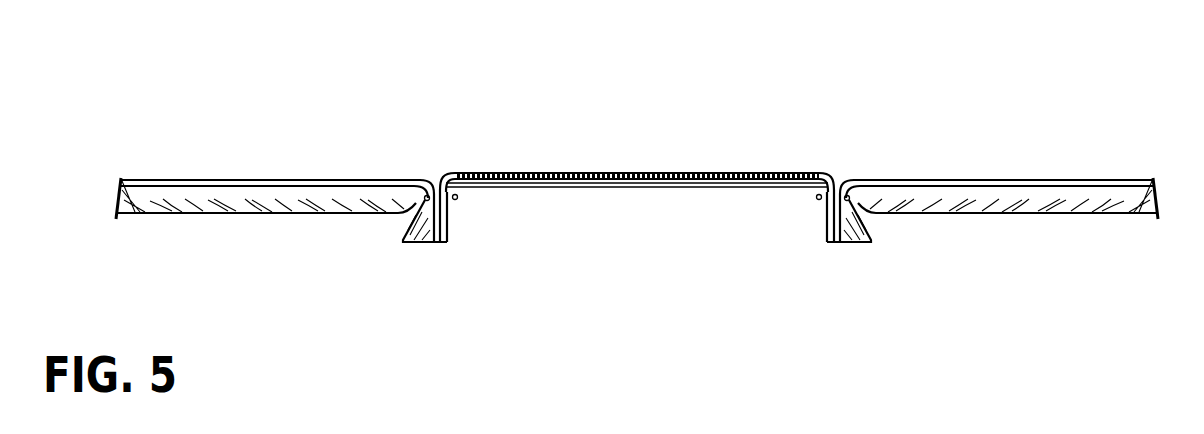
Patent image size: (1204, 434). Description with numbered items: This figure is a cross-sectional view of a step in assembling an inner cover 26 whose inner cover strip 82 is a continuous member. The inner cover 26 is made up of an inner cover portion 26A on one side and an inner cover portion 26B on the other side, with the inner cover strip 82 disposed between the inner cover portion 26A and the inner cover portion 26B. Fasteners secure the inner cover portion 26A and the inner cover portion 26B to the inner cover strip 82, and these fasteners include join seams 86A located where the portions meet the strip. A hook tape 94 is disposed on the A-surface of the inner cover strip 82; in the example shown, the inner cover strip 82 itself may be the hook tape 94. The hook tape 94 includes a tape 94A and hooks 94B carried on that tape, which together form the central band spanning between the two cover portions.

The inner cover 26 is at (637, 161).
The inner cover portion 26A is at (258, 198).
The inner cover portion 26B is at (1018, 200).
The inner cover strip 82 is at (637, 139).
The join seams 86A is at (465, 200).
The hook tape 94 is at (637, 132).
The tape 94A is at (607, 187).
The hooks 94B is at (648, 168).